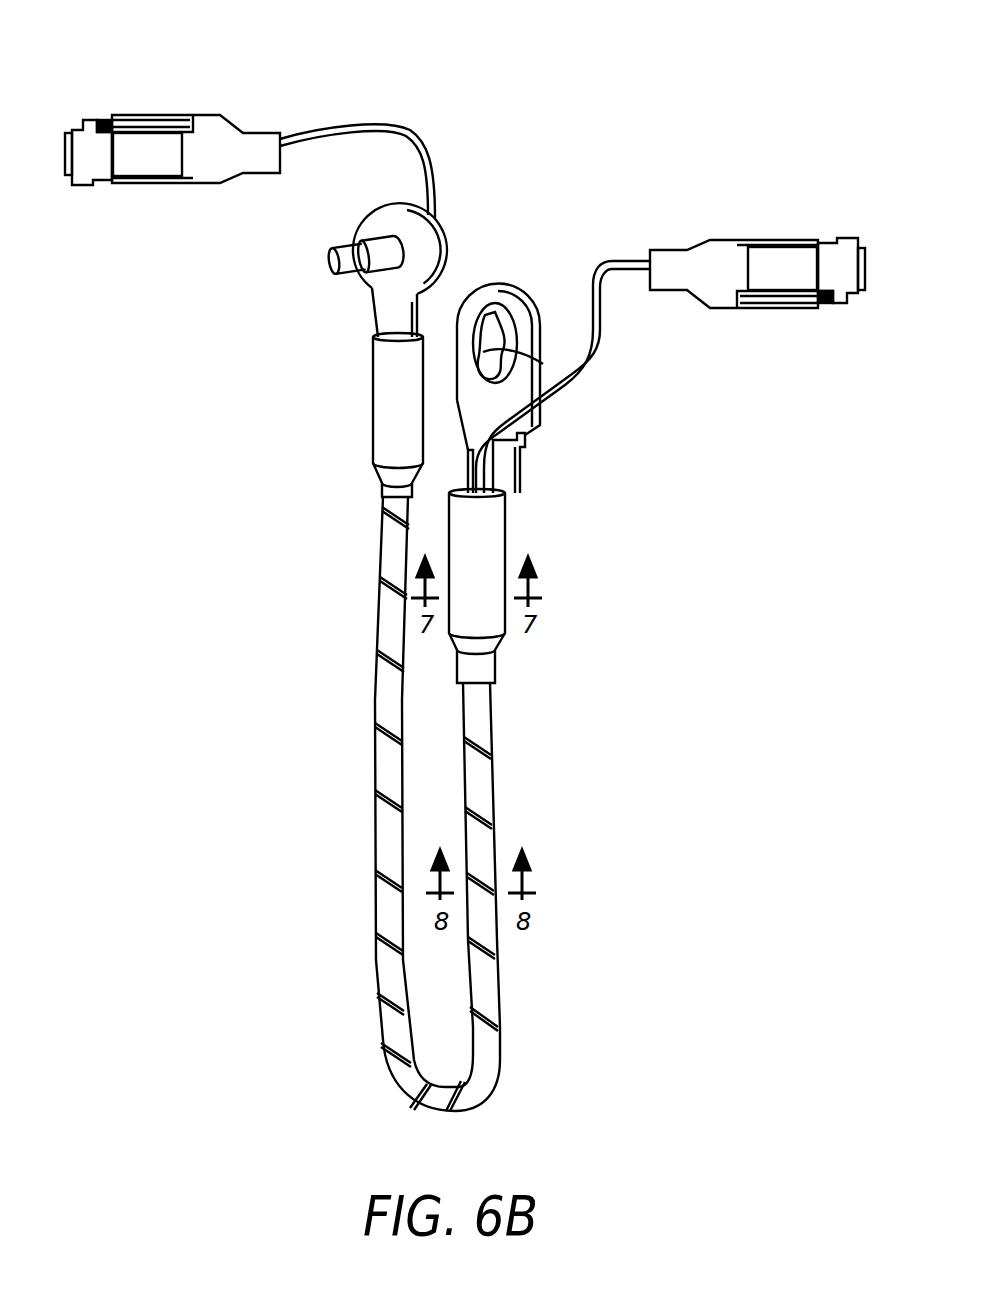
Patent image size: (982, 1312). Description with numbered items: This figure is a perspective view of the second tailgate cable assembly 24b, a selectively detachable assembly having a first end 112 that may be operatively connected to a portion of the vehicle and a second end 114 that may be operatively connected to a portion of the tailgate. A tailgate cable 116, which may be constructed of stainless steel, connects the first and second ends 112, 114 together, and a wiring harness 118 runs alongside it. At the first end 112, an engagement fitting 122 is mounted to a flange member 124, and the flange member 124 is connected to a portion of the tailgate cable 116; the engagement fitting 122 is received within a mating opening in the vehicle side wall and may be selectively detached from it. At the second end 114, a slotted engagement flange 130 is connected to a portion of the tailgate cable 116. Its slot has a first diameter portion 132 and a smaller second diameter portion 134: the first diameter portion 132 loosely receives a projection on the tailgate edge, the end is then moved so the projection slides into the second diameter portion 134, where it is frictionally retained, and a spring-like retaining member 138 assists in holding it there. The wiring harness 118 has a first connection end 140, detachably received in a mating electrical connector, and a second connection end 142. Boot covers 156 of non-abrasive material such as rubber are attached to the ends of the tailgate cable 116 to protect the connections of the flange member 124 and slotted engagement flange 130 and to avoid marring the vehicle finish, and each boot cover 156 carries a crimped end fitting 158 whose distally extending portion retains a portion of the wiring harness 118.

The second tailgate cable assembly 24b is at (465, 563).
The first end 112 is at (328, 305).
The second end 114 is at (578, 385).
The tailgate cable 116 is at (488, 803).
The wiring harness 118 is at (368, 124).
The engagement fitting 122 is at (323, 264).
The flange member 124 is at (383, 224).
The slotted engagement flange 130 is at (522, 468).
The first diameter portion 132 is at (543, 362).
The second diameter portion 134 is at (493, 322).
The spring-like retaining member 138 is at (523, 423).
The first connection end 140 is at (165, 115).
The second connection end 142 is at (773, 240).
The boot cover 156 is at (385, 433).
The crimped end fitting 158 is at (507, 515).